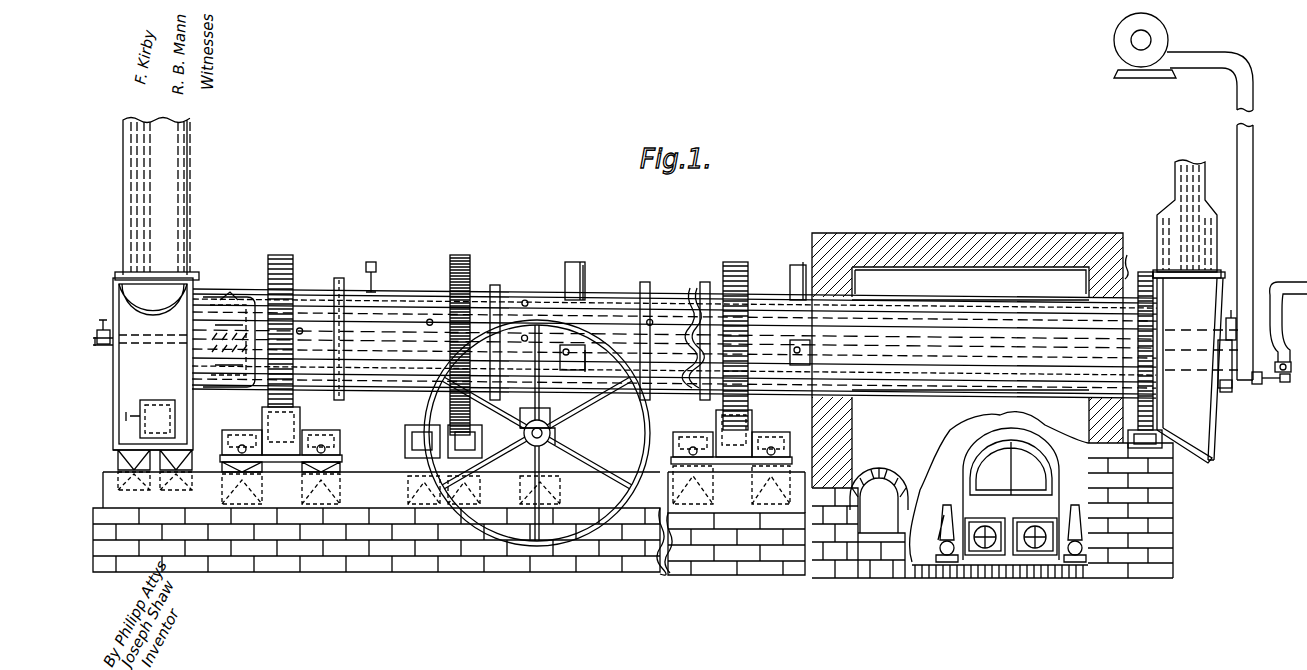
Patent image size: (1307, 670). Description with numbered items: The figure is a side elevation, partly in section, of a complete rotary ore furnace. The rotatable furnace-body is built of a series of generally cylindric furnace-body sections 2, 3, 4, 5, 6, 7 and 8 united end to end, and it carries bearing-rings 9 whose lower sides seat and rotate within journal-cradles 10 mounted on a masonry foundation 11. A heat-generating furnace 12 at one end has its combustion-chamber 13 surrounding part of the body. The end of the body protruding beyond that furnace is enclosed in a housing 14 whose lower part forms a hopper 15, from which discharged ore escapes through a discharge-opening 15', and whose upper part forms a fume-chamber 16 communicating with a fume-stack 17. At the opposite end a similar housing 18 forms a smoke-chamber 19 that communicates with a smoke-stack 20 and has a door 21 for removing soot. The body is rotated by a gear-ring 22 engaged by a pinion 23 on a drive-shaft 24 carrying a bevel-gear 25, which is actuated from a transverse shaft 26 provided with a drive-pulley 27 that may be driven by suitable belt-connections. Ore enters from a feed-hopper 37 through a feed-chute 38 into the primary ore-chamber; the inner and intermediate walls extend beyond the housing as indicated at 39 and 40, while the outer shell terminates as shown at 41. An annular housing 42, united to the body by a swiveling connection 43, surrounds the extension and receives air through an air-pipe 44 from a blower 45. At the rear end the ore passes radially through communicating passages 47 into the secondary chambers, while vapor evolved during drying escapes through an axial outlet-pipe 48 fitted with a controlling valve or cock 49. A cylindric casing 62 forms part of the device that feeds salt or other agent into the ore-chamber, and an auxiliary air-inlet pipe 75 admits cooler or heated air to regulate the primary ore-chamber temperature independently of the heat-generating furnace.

The furnace-body section 2 is at (244, 296).
The furnace-body section 3 is at (400, 292).
The furnace-body section 4 is at (590, 300).
The furnace-body section 5 is at (665, 300).
The furnace-body section 6 is at (750, 300).
The furnace-body section 7 is at (932, 308).
The furnace-body section 8 is at (1132, 255).
The bearing-ring 9 is at (294, 264).
The journal-cradle 10 is at (301, 412).
The masonry foundation 11 is at (741, 552).
The heat-generating furnace 12 is at (932, 238).
The combustion-chamber 13 is at (970, 283).
The housing 14 is at (1222, 293).
The hopper 15 is at (1228, 369).
The discharge-opening 15' is at (1207, 452).
The fume-chamber 16 is at (1200, 284).
The fume-stack 17 is at (1201, 215).
The housing 18 is at (119, 313).
The smoke-chamber 19 is at (186, 283).
The smoke-stack 20 is at (186, 200).
The door 21 is at (158, 400).
The gear-ring 22 is at (470, 276).
The pinion 23 is at (342, 452).
The drive-shaft 24 is at (442, 482).
The bevel-gear 25 is at (540, 418).
The transverse shaft 26 is at (556, 435).
The wheel rim 27 is at (648, 448).
The feed-hopper 37 is at (1288, 322).
The feed-chute 38 is at (1291, 362).
The inner wall extension 39 is at (1260, 384).
The intermediate wall extension 40 is at (1226, 384).
The outer shell termination 41 is at (1166, 302).
The annular housing 42 is at (1246, 332).
The swiveling connection 43 is at (1226, 322).
The air-pipe 44 is at (1243, 242).
The blower 45 is at (1139, 68).
The communicating passage 47 is at (216, 297).
The outlet-pipe 48 is at (118, 353).
The controlling valve or cock 49 is at (114, 340).
The cylindric casing 62 is at (572, 272).
The auxiliary air-inlet pipe 75 is at (1293, 384).